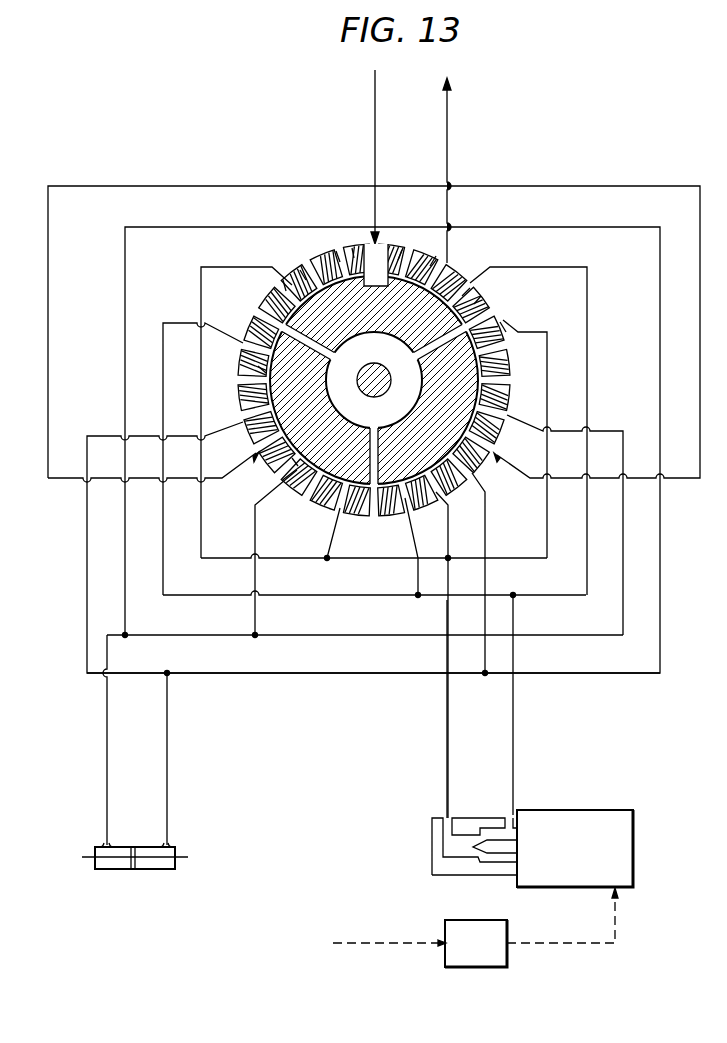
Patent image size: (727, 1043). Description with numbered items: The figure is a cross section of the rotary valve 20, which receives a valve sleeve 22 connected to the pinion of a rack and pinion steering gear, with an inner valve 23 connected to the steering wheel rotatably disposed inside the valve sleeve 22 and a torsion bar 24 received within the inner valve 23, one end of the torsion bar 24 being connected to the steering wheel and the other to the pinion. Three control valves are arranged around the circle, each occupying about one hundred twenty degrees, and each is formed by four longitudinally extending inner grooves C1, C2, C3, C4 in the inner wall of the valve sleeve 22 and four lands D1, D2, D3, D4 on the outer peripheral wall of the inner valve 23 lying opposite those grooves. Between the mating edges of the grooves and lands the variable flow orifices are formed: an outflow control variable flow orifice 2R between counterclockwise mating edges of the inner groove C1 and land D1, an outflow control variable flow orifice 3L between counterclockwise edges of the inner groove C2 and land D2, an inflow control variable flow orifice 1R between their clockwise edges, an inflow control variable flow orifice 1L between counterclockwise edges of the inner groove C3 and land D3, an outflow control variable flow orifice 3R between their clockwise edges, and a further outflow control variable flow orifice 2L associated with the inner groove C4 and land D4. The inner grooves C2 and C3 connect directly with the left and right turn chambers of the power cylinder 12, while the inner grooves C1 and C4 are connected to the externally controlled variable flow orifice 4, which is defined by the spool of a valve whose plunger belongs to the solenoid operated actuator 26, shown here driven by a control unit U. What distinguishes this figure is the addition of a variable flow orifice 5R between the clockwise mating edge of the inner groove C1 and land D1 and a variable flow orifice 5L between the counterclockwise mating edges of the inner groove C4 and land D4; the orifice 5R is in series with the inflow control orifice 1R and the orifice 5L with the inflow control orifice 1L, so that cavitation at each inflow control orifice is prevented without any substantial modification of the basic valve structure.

The rotary valve 20 is at (292, 214).
The valve sleeve 22 is at (503, 320).
The inner valve 23 is at (292, 458).
The torsion bar 24 is at (262, 370).
The power cylinder 12 is at (130, 847).
The solenoid operated actuator 26 is at (570, 810).
The externally controlled variable flow orifice 4 is at (476, 856).
The control unit U is at (508, 962).
The inflow control variable flow orifice 1R is at (358, 259).
The inflow control variable flow orifice 1L is at (390, 259).
The outflow control variable flow orifice 2R is at (471, 306).
The outflow control variable flow orifice 2L is at (487, 333).
The outflow control variable flow orifice 3R is at (421, 267).
The outflow control variable flow orifice 3L is at (327, 267).
The variable flow orifice 5R is at (300, 283).
The variable flow orifice 5L is at (448, 283).
The inner groove C1 is at (283, 283).
The inner groove C2 is at (337, 257).
The inner groove C3 is at (400, 258).
The inner groove C4 is at (478, 300).
The land D1 is at (300, 281).
The land D2 is at (352, 257).
The land D3 is at (432, 263).
The land D4 is at (466, 292).